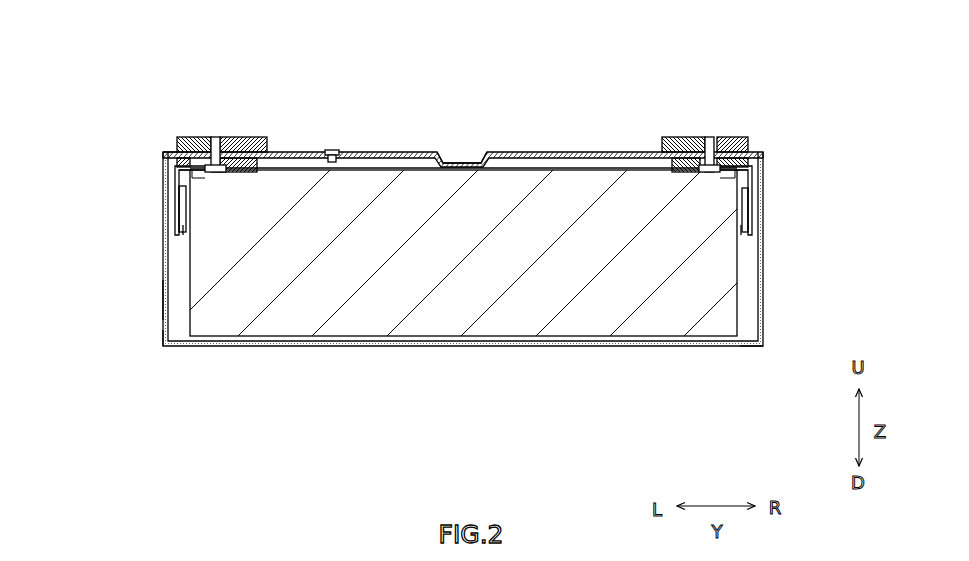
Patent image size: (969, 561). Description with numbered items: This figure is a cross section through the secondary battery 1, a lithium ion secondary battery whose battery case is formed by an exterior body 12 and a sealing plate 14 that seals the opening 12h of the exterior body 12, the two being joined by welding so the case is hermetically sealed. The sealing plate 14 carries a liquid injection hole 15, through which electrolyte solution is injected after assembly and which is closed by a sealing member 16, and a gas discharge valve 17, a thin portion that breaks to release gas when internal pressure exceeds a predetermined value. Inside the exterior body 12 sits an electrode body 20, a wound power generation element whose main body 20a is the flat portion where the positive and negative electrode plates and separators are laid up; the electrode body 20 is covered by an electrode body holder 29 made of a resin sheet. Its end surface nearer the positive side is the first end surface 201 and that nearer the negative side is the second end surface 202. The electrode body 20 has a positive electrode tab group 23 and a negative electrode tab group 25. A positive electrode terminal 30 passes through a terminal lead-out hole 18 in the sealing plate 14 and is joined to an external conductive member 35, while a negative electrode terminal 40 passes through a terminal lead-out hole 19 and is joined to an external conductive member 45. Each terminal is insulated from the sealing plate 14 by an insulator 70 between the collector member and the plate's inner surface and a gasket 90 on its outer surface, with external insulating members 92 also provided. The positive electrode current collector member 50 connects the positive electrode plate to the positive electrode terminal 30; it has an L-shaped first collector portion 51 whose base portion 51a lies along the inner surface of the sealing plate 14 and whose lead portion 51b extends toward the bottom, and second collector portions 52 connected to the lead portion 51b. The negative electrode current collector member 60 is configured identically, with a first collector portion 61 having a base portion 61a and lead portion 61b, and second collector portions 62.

The secondary battery 1 is at (133, 29).
The exterior body 12 is at (766, 318).
The opening 12h is at (166, 151).
The sealing plate 14 is at (518, 150).
The liquid injection hole 15 is at (343, 88).
The sealing member 16 is at (335, 150).
The gas discharge valve 17 is at (462, 150).
The terminal lead-out hole 18 is at (207, 132).
The terminal lead-out hole 19 is at (706, 136).
The electrode body 20 is at (544, 293).
The main body 20a is at (445, 320).
The positive electrode tab group 23 is at (183, 233).
The negative electrode tab group 25 is at (741, 233).
The electrode body holder 29 is at (160, 297).
The positive electrode terminal 30 is at (471, 120).
The external conductive member 35 is at (260, 128).
The negative electrode terminal 40 is at (694, 121).
The external conductive member 45 is at (672, 136).
The positive electrode current collector member 50 is at (193, 277).
The first collector portion 51 is at (218, 277).
The base portion 51a is at (225, 172).
The lead portion 51b is at (190, 172).
The second collector portion 52 is at (176, 208).
The negative electrode current collector member 60 is at (732, 277).
The first collector portion 61 is at (704, 277).
The base portion 61a is at (690, 172).
The lead portion 61b is at (705, 172).
The second collector portion 62 is at (752, 207).
The insulator 70 is at (262, 163).
The gasket 90 is at (185, 132).
The external insulating member 92 is at (178, 140).
The first end surface 201 is at (167, 328).
The second end surface 202 is at (750, 347).